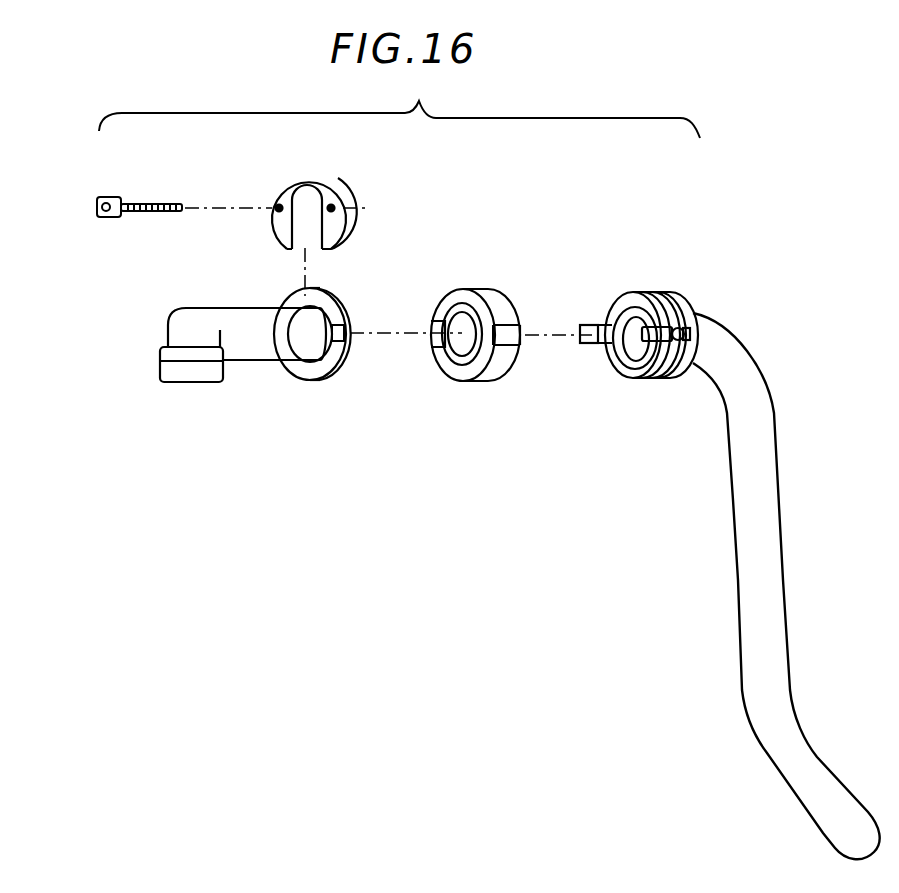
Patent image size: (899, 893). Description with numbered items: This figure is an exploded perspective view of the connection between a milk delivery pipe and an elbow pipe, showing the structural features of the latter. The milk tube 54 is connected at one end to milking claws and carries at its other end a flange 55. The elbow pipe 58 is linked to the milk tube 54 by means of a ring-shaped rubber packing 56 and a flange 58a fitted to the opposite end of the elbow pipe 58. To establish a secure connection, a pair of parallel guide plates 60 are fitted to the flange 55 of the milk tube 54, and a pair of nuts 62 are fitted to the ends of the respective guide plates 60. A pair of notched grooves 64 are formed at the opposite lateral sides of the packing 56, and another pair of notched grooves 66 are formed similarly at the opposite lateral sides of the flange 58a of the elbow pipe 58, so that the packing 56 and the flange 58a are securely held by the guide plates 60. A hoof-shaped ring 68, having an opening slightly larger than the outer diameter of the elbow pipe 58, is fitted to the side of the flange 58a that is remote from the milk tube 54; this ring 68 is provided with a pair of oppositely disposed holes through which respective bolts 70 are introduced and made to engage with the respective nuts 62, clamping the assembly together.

The milk tube 54 is at (772, 618).
The flange 55 is at (686, 306).
The ring-shaped rubber packing 56 is at (512, 310).
The elbow pipe 58 is at (245, 310).
The flange 58a is at (308, 372).
The guide plates 60 is at (622, 360).
The nuts 62 is at (697, 366).
The notched grooves 64 is at (510, 340).
The notched grooves 66 is at (342, 326).
The hoof-shaped ring 68 is at (338, 237).
The bolts 70 is at (116, 216).